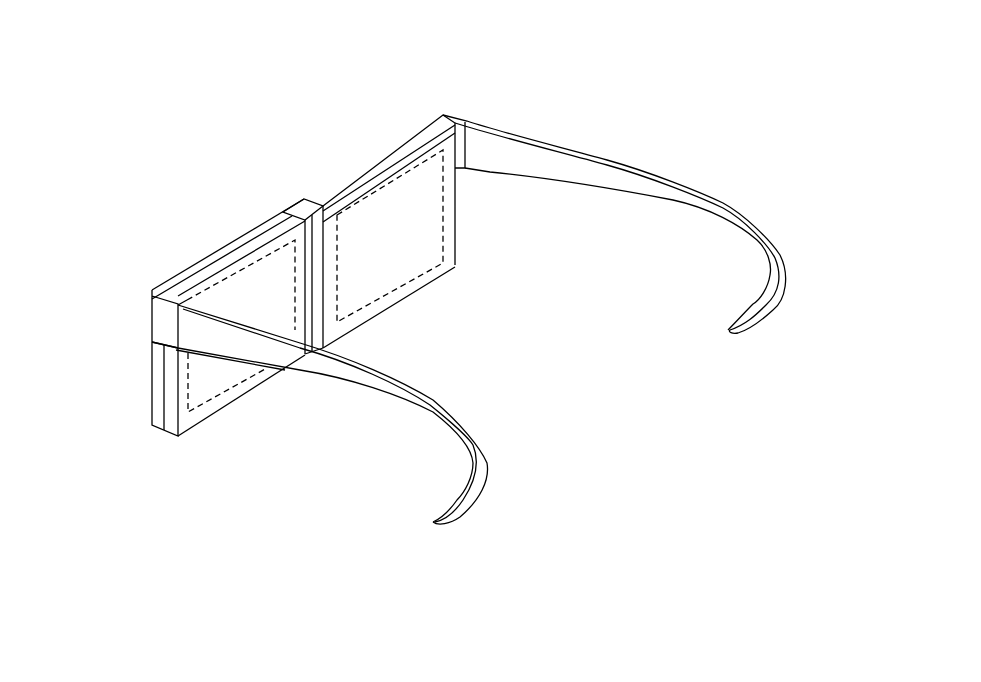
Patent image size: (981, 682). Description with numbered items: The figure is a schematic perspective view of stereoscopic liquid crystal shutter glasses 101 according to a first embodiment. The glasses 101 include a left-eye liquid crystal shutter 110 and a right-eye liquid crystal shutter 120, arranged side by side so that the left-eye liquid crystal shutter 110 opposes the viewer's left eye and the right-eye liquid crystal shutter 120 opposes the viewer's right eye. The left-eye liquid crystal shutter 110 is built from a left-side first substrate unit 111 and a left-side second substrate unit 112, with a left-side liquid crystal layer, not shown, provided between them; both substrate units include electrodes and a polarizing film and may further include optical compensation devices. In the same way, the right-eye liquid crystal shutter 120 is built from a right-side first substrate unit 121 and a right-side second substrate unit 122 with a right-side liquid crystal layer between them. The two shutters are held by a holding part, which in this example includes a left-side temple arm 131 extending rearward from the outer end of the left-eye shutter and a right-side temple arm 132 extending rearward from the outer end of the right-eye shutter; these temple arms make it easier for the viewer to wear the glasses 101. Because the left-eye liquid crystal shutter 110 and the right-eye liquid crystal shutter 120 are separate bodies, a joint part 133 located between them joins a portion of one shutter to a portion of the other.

The stereoscopic liquid crystal shutter glasses 101 is at (672, 84).
The left-eye liquid crystal shutter 110 is at (218, 158).
The left-side first substrate unit 111 is at (228, 257).
The left-side second substrate unit 112 is at (198, 263).
The right-eye liquid crystal shutter 120 is at (372, 62).
The right-side first substrate unit 121 is at (393, 163).
The right-side second substrate unit 122 is at (358, 163).
The left-side temple arm 131 is at (327, 366).
The right-side temple arm 132 is at (583, 173).
The joint part 133 is at (330, 227).